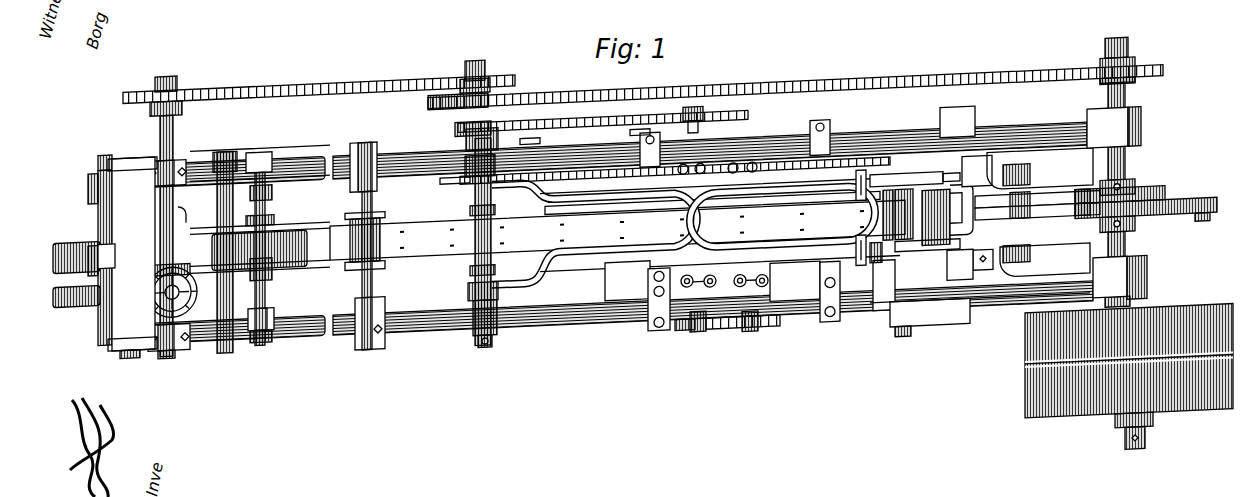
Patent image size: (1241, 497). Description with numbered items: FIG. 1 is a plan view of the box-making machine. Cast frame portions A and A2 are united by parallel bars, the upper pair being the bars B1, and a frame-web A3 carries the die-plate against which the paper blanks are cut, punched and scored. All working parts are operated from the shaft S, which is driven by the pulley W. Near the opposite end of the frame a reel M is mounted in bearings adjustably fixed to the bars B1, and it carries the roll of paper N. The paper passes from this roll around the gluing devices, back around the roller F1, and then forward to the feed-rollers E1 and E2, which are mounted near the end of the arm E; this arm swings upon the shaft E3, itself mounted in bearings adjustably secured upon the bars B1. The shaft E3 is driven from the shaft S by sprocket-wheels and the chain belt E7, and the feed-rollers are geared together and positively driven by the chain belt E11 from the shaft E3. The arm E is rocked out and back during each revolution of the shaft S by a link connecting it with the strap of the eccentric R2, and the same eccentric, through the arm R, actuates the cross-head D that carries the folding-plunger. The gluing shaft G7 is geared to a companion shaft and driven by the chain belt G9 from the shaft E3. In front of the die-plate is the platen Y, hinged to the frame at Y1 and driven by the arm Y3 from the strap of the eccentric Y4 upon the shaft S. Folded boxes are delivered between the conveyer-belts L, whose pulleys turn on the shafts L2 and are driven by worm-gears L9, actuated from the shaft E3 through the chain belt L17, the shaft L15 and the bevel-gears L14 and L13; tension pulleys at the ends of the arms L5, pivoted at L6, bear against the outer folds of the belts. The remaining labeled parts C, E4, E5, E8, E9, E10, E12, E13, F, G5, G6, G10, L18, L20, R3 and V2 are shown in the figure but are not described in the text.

The frame portion A is at (1120, 277).
The frame portion A2 is at (132, 258).
The frame-web A3 is at (880, 335).
The upper bars B1 is at (283, 180).
The slide block C is at (985, 206).
The cross-head D is at (1040, 167).
The arm E is at (600, 296).
The feed-roller E1 is at (893, 250).
The feed-roller E2 is at (934, 234).
The shaft E3 is at (476, 82).
The vertical shaft E4 is at (478, 350).
The rack end E5 is at (430, 122).
The chain belt E7 is at (540, 118).
The collar E8 is at (1134, 85).
The slide E9 is at (856, 226).
The link E10 is at (973, 167).
The chain belt E11 is at (915, 164).
The guide E12 is at (1045, 259).
The plate E13 is at (447, 179).
The post F is at (385, 360).
The roller F1 is at (382, 280).
The pinion G5 is at (765, 362).
The gear G6 is at (700, 140).
The shaft G7 is at (700, 364).
The chain belt G9 is at (605, 145).
The rack carrier G10 is at (456, 150).
The conveyer-belts L is at (84, 257).
The shafts L2 is at (98, 222).
The arms L5 is at (254, 230).
The pivot L6 is at (235, 163).
The worm-gears L9 is at (82, 311).
The bevel-gear L13 is at (186, 292).
The bevel-gear L14 is at (150, 277).
The shaft L15 is at (174, 142).
The chain belt L17 is at (228, 95).
The collar L18 is at (487, 99).
The nut L20 is at (170, 84).
The reel M is at (272, 292).
The roll of paper N is at (617, 230).
The arm R is at (1037, 205).
The eccentric R2 is at (1172, 227).
The rack bar R3 is at (1153, 209).
The shaft S is at (1120, 88).
The bracket V2 is at (722, 292).
The pulley W is at (1025, 396).
The platen Y is at (957, 188).
The hinge Y1 is at (980, 323).
The arm Y3 is at (1037, 197).
The eccentric Y4 is at (1138, 150).